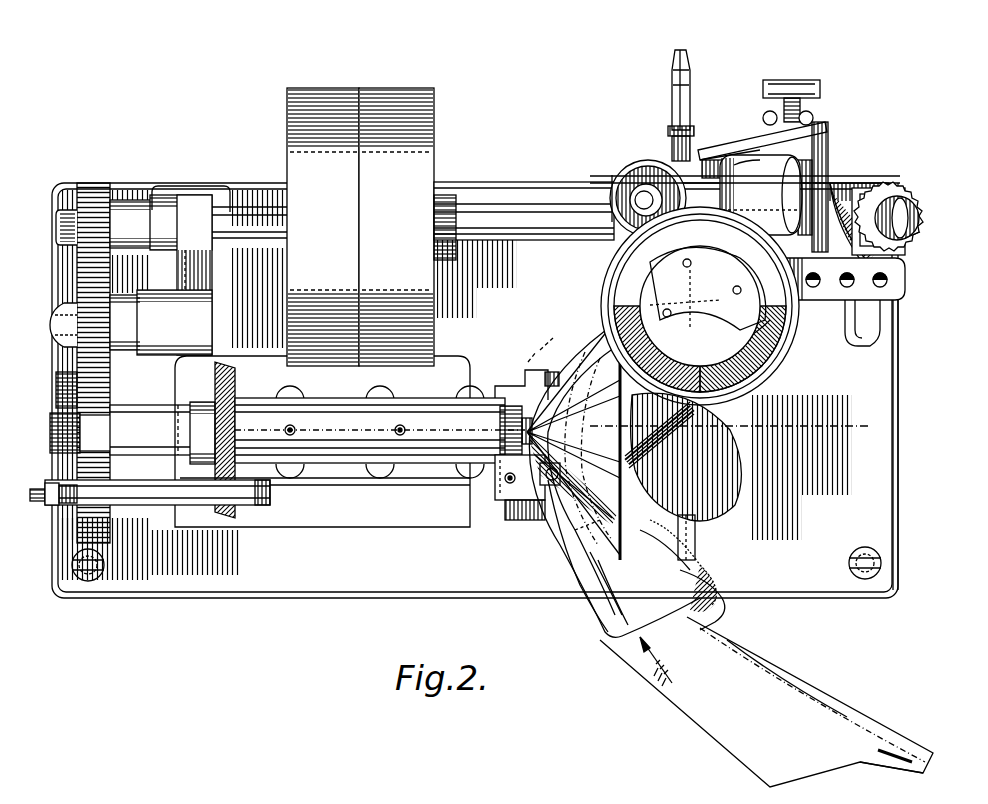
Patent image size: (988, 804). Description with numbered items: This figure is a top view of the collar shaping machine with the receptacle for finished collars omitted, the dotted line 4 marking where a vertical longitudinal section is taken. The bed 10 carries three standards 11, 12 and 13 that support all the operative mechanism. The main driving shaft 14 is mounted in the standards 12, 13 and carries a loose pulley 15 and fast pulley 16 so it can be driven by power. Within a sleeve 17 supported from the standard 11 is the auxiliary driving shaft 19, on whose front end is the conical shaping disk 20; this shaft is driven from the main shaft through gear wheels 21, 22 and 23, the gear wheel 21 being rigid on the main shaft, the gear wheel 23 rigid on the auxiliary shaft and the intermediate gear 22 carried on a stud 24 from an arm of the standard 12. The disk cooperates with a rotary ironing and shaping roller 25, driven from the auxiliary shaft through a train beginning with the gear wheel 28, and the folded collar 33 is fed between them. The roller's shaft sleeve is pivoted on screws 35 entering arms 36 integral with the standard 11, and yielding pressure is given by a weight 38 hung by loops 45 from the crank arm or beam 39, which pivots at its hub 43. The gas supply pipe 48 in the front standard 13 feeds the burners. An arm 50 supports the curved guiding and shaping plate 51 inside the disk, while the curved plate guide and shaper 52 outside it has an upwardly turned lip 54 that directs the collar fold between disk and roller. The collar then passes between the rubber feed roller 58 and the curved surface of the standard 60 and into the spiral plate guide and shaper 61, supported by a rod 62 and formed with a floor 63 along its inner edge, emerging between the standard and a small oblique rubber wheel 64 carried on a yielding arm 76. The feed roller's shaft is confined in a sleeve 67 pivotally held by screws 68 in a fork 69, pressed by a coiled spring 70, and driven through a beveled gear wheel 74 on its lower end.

The section line 4— 4 is at (584, 424).
The bed 10 is at (322, 580).
The standard 11 is at (329, 441).
The standard 12 is at (190, 195).
The front standard 13 is at (862, 348).
The main driving shaft 14 is at (540, 210).
The loose pulley 15 is at (396, 227).
The fast pulley 16 is at (323, 227).
The sleeve 17 is at (380, 430).
The auxiliary driving shaft 19 is at (155, 428).
The conical shaping disk 20 is at (575, 535).
The gear wheel 21 is at (98, 190).
The intermediate gear 22 is at (77, 290).
The gear wheel 23 is at (77, 390).
The stud 24 is at (160, 305).
The ironing and shaping roller 25 is at (705, 510).
The gear wheel 28 is at (232, 512).
The folded collar 33 is at (766, 702).
The screws 35 is at (530, 528).
The arms 36 is at (520, 413).
The weight 38 is at (58, 505).
The crank arm or beam 39 is at (30, 492).
The hub 43 is at (500, 500).
The loops 45 is at (48, 500).
The gas supply pipe 48 is at (700, 566).
The arm 50 is at (573, 445).
The curved guiding and shaping plate 51 is at (605, 588).
The curved plate guide and shaper 52 is at (590, 325).
The upwardly turned lip 54 is at (720, 598).
The feed roller 58 is at (761, 195).
The standard 60 is at (705, 285).
The plate guide and shaper 61 is at (815, 348).
The rod 62 is at (890, 305).
The floor 63 is at (775, 380).
The oblique rubber wheel 64 is at (628, 172).
The sleeve 67 is at (848, 188).
The screws 68 is at (930, 210).
The fork 69 is at (890, 188).
The coiled spring 70 is at (822, 130).
The beveled gear wheel 74 is at (930, 238).
The arm 76 is at (722, 145).